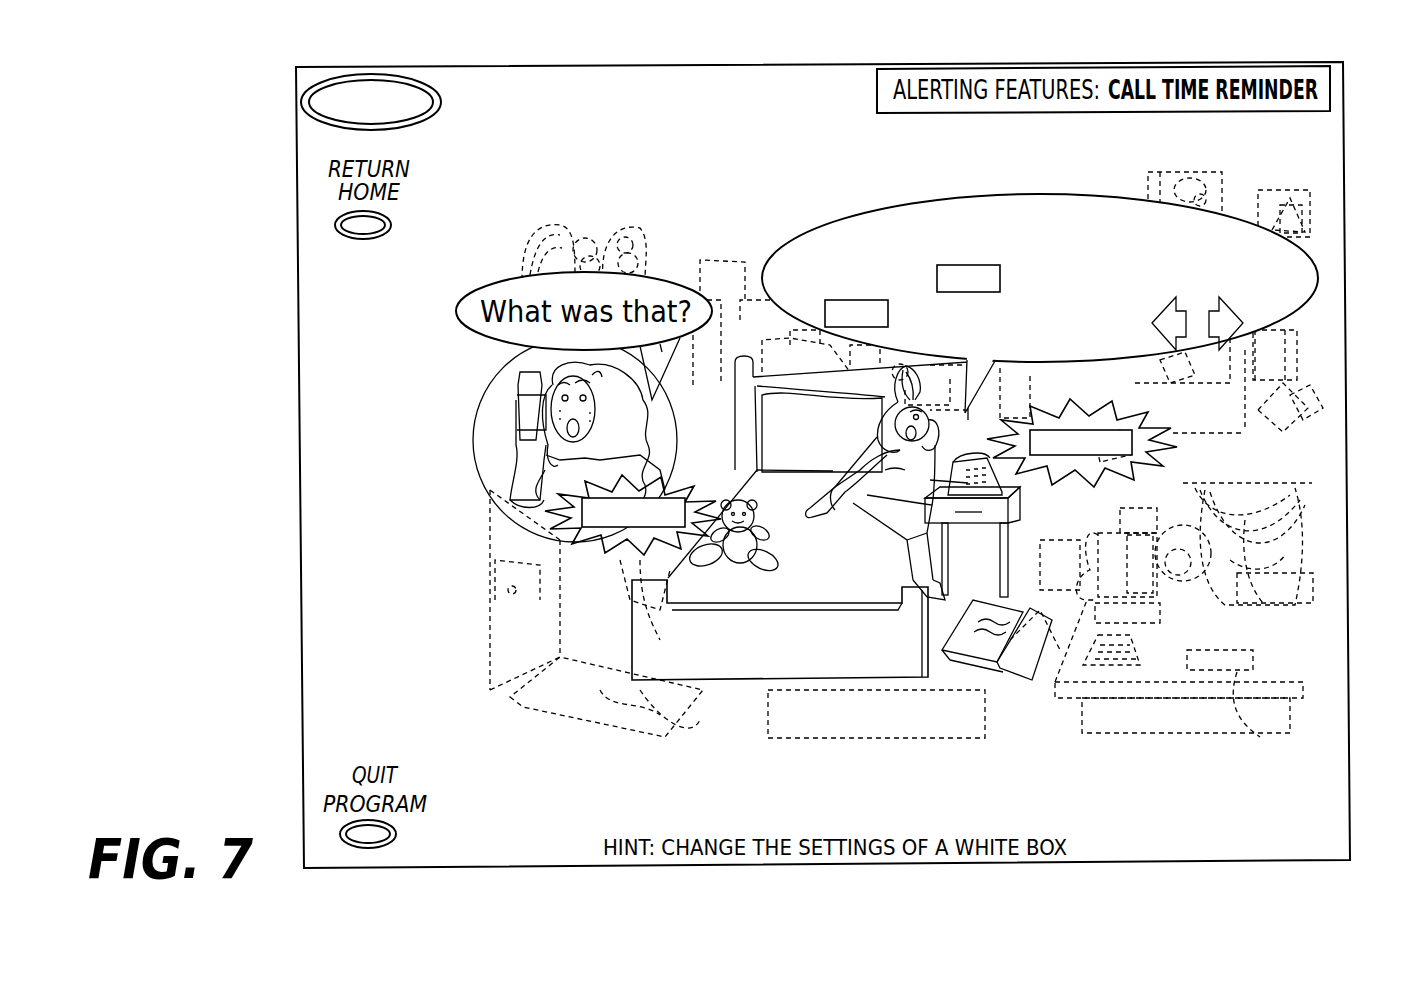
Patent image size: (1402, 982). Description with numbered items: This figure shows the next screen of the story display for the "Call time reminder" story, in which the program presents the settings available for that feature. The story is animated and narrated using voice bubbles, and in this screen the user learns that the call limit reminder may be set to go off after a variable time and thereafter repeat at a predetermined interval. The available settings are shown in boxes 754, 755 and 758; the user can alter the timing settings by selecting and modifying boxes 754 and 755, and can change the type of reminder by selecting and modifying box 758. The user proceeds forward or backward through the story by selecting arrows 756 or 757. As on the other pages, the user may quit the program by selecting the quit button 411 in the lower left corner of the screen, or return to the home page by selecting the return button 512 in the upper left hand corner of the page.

The quit button 411 is at (375, 832).
The return button 512 is at (361, 226).
The box 754 is at (1056, 294).
The box 755 is at (825, 318).
The arrow 756 is at (1163, 327).
The arrow 757 is at (1225, 335).
The box 758 is at (1165, 455).